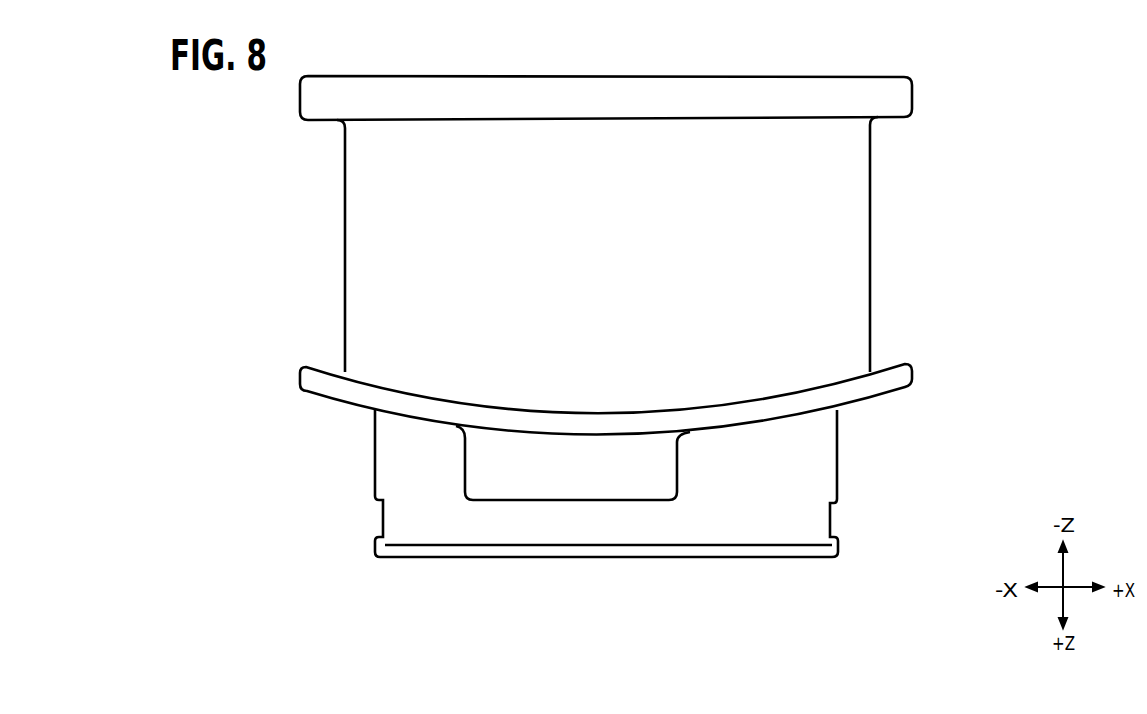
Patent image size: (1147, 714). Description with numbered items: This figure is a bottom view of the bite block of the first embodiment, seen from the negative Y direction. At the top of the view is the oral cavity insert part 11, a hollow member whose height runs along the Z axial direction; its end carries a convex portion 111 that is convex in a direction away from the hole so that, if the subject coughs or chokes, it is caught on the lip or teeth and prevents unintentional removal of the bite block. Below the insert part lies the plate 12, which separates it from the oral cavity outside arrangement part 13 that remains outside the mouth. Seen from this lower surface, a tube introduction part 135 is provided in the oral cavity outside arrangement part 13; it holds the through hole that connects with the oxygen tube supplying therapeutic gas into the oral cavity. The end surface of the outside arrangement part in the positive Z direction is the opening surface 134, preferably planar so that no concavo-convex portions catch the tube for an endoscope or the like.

The oral cavity insert part 11 is at (938, 78).
The convex portion 111 is at (904, 86).
The plate 12 is at (323, 387).
The oral cavity outside arrangement part 13 is at (400, 478).
The opening surface 134 is at (733, 557).
The tube introduction part 135 is at (562, 488).